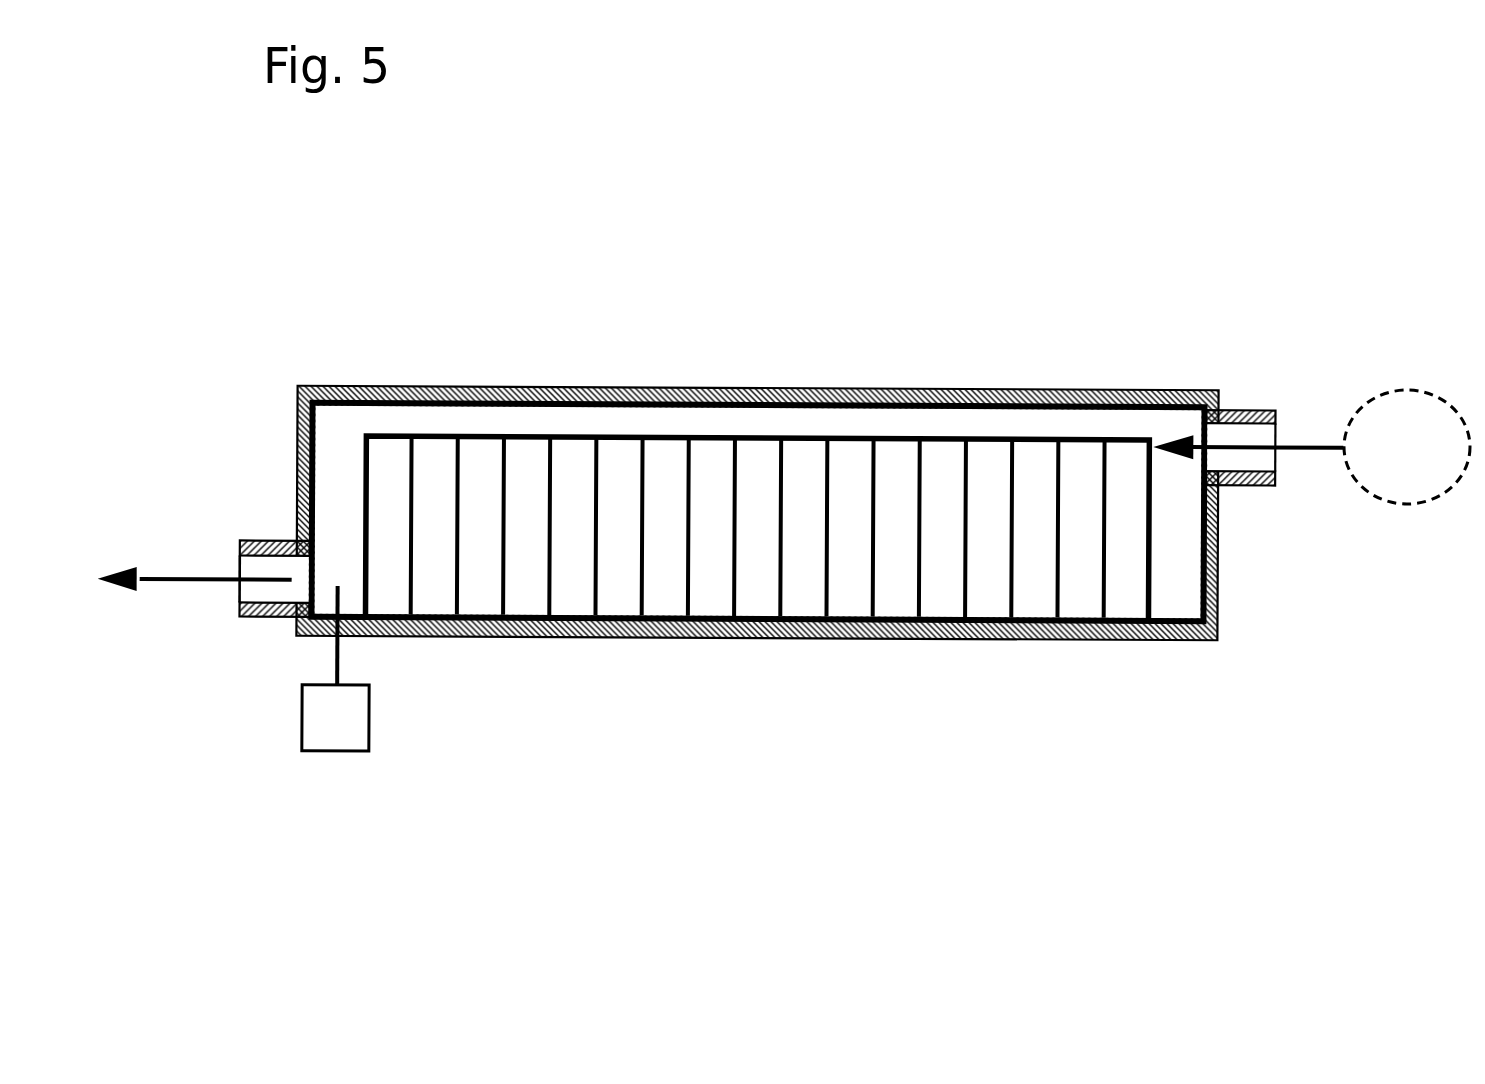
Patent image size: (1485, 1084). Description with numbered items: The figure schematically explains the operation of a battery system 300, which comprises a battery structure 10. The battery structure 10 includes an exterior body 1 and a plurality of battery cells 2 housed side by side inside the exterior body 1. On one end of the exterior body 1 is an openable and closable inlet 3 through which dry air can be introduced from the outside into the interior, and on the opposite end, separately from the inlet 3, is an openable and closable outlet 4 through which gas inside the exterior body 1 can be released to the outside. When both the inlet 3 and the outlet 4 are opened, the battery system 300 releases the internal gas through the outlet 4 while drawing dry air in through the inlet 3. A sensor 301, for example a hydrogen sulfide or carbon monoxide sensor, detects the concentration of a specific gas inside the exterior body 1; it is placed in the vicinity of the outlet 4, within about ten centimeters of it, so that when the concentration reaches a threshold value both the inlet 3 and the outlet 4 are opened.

The battery system 300 is at (723, 165).
The battery structure 10 is at (298, 324).
The exterior body 1 is at (1081, 390).
The battery cell 2 is at (1078, 603).
The inlet 3 is at (1236, 408).
The outlet 4 is at (271, 620).
The sensor 301 is at (332, 755).